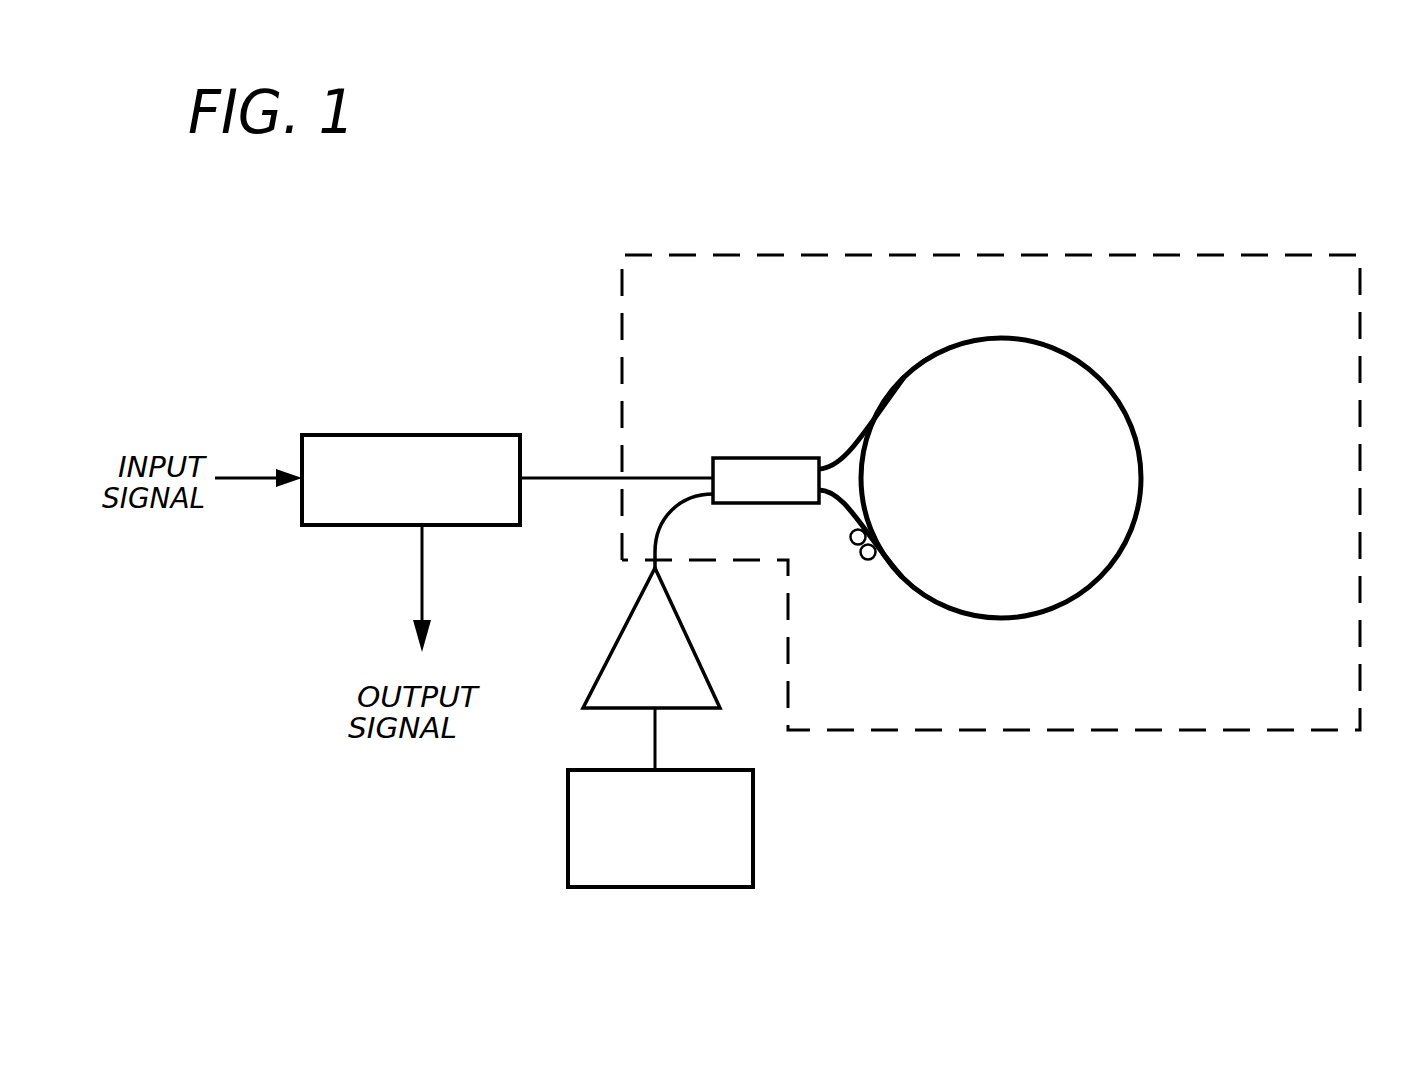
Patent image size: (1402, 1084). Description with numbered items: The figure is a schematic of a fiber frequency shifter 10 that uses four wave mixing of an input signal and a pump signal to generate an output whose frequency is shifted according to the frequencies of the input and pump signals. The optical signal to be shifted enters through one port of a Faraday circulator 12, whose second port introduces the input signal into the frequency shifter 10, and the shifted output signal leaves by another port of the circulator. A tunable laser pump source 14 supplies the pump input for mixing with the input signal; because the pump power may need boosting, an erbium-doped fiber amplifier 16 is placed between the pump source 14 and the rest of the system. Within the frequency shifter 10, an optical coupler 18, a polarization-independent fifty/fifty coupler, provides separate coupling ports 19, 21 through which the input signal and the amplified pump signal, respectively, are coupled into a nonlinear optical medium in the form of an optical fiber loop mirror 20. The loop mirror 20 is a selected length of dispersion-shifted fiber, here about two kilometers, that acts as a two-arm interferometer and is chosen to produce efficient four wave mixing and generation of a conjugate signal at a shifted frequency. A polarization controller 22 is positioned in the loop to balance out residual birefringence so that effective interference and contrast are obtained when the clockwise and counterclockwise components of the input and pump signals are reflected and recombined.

The fiber frequency shifter 10 is at (840, 283).
The Faraday circulator 12 is at (470, 457).
The tunable laser pump source 14 is at (586, 840).
The erbium-doped fiber amplifier 16 is at (663, 628).
The optical coupler 18 is at (762, 468).
The coupling port 19 is at (706, 466).
The optical fiber loop mirror 20 is at (1142, 420).
The coupling port 21 is at (706, 503).
The polarization controller 22 is at (870, 561).